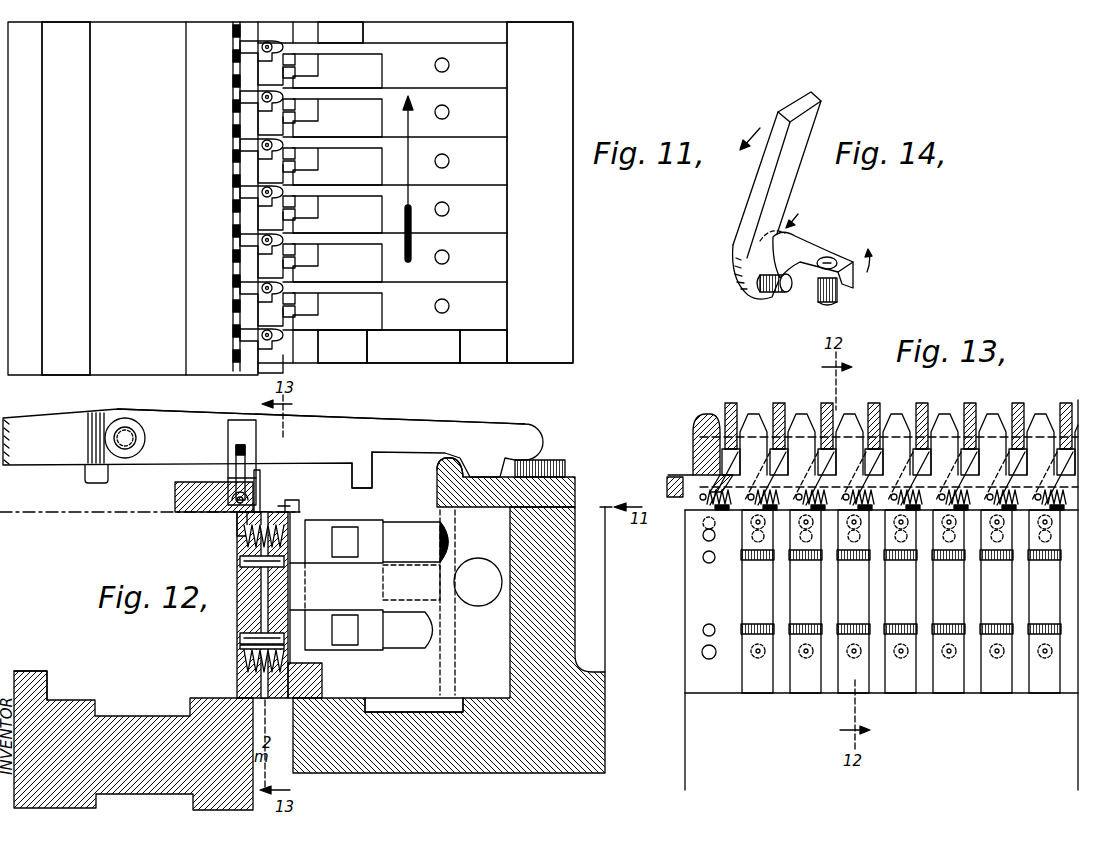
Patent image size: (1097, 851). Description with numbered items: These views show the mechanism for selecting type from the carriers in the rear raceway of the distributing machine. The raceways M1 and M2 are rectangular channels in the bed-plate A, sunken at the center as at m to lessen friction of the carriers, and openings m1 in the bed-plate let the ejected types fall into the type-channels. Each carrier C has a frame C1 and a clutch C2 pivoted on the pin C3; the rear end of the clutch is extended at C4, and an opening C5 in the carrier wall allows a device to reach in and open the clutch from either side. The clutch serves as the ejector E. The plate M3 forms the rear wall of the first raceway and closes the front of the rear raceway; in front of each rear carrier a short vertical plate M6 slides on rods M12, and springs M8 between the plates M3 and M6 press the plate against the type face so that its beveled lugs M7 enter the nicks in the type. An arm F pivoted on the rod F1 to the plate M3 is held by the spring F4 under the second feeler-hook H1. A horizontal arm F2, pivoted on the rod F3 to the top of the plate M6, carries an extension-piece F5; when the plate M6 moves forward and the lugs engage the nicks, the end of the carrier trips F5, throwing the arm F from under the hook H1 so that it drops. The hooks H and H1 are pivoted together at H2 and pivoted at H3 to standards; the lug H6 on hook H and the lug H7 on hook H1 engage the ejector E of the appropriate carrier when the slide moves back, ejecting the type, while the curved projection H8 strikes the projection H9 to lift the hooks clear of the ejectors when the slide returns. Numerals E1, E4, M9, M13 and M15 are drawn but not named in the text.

In FIG. 11, the bed-plate A is at (540, 192).
In FIG. 12, the bed-plate A is at (120, 730).
In FIG. 13, the bed-plate A is at (881, 595).
In FIG. 11, the carrier C is at (445, 186).
In FIG. 12, the frame of the carrier C1 is at (432, 602).
In FIG. 12, the clutch C2 is at (372, 586).
In FIG. 11, the pin C3 is at (449, 114).
In FIG. 12, the pin C3 is at (442, 540).
In FIG. 12, the extremity of the rear end of the clutch C4 is at (478, 582).
In FIG. 12, the opening in the wall of the carrier C5 is at (486, 555).
In FIG. 11, the ejector E is at (322, 114).
In FIG. 12, the ejector E is at (320, 490).
In FIG. 12, the escapement lug E1 is at (336, 630).
In FIG. 12, the escapement pawl E4 is at (335, 542).
In FIG. 11, the arm F is at (240, 58).
In FIG. 12, the arm F is at (234, 478).
In FIG. 13, the arm F is at (712, 470).
In FIG. 14, the arm F is at (760, 192).
In FIG. 13, the rod F1 is at (722, 466).
In FIG. 14, the rod F1 is at (784, 293).
In FIG. 11, the horizontal arm F2 is at (252, 197).
In FIG. 12, the horizontal arm F2 is at (262, 510).
In FIG. 14, the horizontal arm F2 is at (806, 250).
In FIG. 11, the rod F3 is at (262, 341).
In FIG. 14, the rod F3 is at (841, 298).
In FIG. 12, the spring F4 is at (240, 529).
In FIG. 13, the spring F4 is at (703, 535).
In FIG. 11, the extension-piece F5 is at (342, 346).
In FIG. 14, the extension-piece F5 is at (856, 262).
In FIG. 12, the feeler-hook H is at (273, 448).
In FIG. 12, the second feeler-hook H1 is at (321, 428).
In FIG. 13, the second feeler-hook H1 is at (730, 403).
In FIG. 12, the pivot H2 is at (140, 437).
In FIG. 12, the pivot H3 is at (248, 435).
In FIG. 13, the pivot H3 is at (702, 425).
In FIG. 12, the lug H6 is at (106, 476).
In FIG. 12, the lug H7 is at (373, 471).
In FIG. 12, the curved projection H8 is at (511, 460).
In FIG. 12, the projection H9 is at (446, 459).
In FIG. 11, the raceway M1 is at (42, 291).
In FIG. 12, the raceway M1 is at (48, 678).
In FIG. 11, the raceway M2 is at (483, 346).
In FIG. 12, the raceway M2 is at (365, 698).
In FIG. 11, the rear wall of the raceway M3 is at (246, 266).
In FIG. 12, the rear wall of the raceway M3 is at (258, 702).
In FIG. 13, the rear wall of the raceway M3 is at (765, 678).
In FIG. 11, the vertical plate M6 is at (262, 208).
In FIG. 12, the vertical plate M6 is at (290, 678).
In FIG. 11, the lug M7 is at (262, 229).
In FIG. 12, the lug M7 is at (290, 562).
In FIG. 12, the spring M8 is at (240, 540).
In FIG. 13, the spring M8 is at (757, 660).
In FIG. 12, the guide block M9 is at (200, 513).
In FIG. 13, the guide block M9 is at (668, 477).
In FIG. 12, the sliding rod M12 is at (242, 562).
In FIG. 13, the sliding rod M12 is at (766, 562).
In FIG. 12, the stem collar M13 is at (240, 633).
In FIG. 13, the stem collar M13 is at (712, 565).
In FIG. 12, the stem spring M15 is at (244, 656).
In FIG. 13, the stem spring M15 is at (703, 560).
In FIG. 11, the sunken center of raceway m is at (290, 322).
In FIG. 12, the sunken center of raceway m is at (298, 709).
In FIG. 13, the opening m1 is at (830, 592).